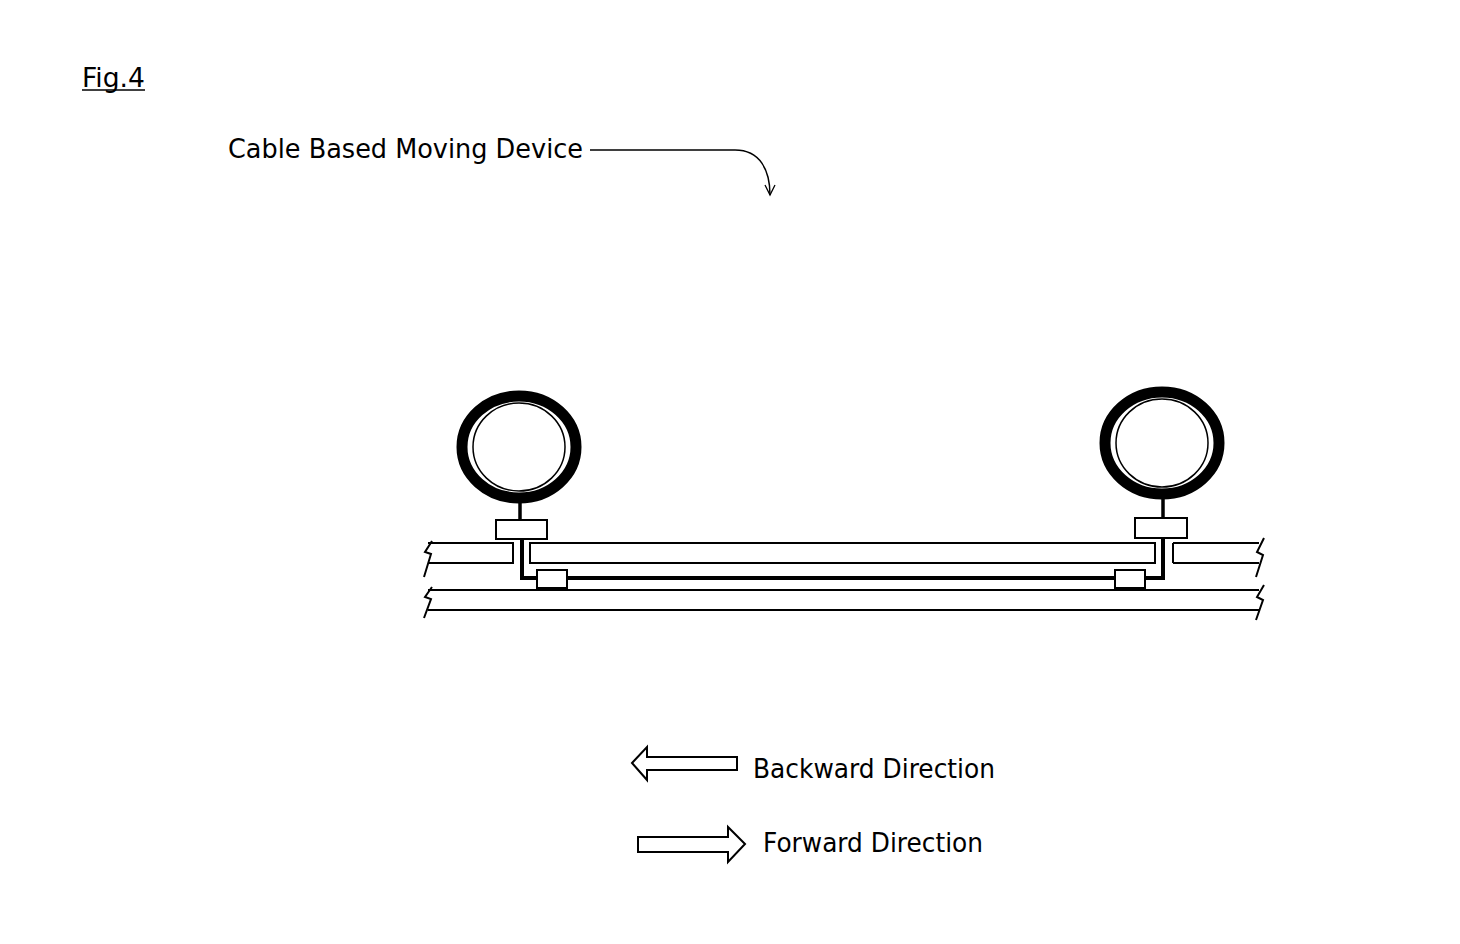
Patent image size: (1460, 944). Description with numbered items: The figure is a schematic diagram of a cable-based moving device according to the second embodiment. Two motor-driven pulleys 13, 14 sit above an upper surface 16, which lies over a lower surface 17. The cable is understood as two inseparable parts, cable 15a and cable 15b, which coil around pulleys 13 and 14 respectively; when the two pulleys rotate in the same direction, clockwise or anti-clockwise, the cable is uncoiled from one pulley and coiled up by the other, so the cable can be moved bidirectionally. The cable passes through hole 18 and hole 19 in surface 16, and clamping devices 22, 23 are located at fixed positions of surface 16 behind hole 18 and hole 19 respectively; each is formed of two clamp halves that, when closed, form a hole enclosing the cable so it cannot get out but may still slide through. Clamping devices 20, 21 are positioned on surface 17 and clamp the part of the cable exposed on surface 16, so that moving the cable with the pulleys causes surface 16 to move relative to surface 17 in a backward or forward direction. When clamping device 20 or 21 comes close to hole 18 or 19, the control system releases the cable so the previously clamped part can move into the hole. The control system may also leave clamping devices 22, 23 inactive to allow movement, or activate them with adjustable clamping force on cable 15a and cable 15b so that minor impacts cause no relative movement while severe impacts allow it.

The pulley 13 is at (511, 445).
The pulley 14 is at (1163, 432).
The cable 15a is at (487, 397).
The cable 15b is at (1132, 395).
The surface 16 is at (420, 555).
The surface 17 is at (1268, 583).
The hole 18 is at (513, 575).
The hole 19 is at (1177, 570).
The clamping device 20 is at (550, 582).
The clamping device 21 is at (1130, 578).
The clamping device 22 is at (548, 527).
The clamping device 23 is at (1135, 527).